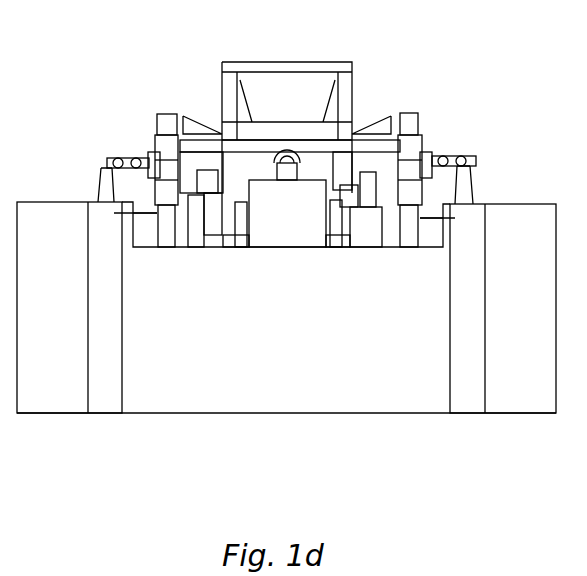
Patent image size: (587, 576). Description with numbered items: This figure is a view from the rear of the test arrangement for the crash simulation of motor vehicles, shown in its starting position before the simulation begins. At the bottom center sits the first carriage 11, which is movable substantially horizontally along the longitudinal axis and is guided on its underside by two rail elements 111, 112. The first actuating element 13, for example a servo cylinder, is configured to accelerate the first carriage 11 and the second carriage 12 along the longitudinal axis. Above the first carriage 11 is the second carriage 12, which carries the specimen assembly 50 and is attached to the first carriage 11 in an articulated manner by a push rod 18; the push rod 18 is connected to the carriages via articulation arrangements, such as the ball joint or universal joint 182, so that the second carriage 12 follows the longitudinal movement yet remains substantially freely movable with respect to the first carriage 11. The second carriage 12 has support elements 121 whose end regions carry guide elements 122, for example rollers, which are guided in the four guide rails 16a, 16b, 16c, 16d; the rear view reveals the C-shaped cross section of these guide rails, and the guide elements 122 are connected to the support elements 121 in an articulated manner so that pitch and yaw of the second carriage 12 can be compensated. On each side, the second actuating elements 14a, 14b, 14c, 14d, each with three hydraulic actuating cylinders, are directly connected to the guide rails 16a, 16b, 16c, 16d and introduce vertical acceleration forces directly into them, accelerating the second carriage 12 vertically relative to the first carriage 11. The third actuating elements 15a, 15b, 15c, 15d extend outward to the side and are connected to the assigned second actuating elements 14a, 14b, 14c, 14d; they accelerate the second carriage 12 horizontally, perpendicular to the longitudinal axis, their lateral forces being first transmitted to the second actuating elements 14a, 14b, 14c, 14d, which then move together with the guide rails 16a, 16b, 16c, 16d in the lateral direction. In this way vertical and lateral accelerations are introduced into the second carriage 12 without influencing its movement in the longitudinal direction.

The specimen assembly 50 is at (300, 66).
The support element 121 is at (213, 128).
The second carriage 12 is at (198, 148).
The guide element 122 is at (172, 128).
The guide rail 16d is at (166, 128).
The guide rail 16b is at (408, 134).
The second actuating element 14d is at (165, 163).
The second actuating element 14b is at (410, 163).
The third actuating element 15d is at (108, 165).
The third actuating element 15b is at (472, 164).
The third actuating element 15c is at (143, 213).
The third actuating element 15a is at (425, 220).
The first actuating element 13 is at (281, 216).
The push rod 18 is at (291, 185).
The articulation arrangement 182 is at (285, 165).
The second actuating element 14c is at (210, 213).
The guide rail 16c is at (200, 188).
The first carriage 11 is at (245, 208).
The rail element 111 is at (247, 210).
The rail element 112 is at (328, 212).
The second actuating element 14a is at (346, 195).
The guide rail 16a is at (365, 185).